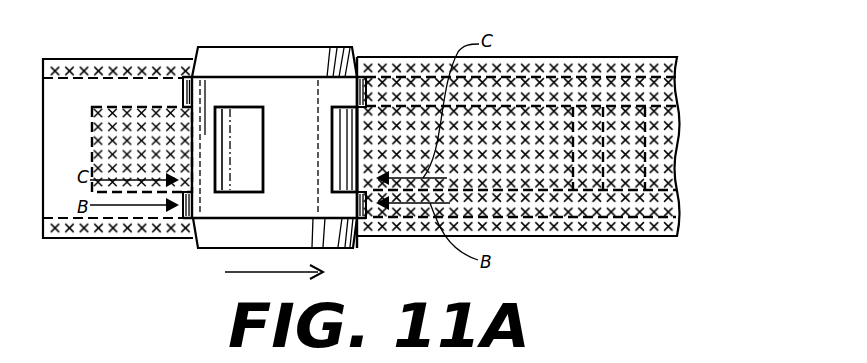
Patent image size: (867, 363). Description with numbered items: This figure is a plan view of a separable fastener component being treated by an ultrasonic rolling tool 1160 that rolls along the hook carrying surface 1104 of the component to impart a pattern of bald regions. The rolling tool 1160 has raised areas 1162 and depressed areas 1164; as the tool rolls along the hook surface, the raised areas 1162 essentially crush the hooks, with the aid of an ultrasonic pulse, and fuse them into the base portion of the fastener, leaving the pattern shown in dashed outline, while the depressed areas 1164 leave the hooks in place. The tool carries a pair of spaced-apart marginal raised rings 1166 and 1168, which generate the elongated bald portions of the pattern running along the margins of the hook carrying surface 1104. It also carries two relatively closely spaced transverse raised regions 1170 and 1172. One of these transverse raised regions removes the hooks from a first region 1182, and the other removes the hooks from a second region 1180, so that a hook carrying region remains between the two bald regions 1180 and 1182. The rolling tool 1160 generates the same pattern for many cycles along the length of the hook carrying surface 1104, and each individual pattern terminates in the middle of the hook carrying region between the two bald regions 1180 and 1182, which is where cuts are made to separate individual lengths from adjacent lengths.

The hook carrying surface 1104 is at (551, 143).
The ultrasonic rolling tool 1160 is at (259, 141).
The raised areas 1162 is at (277, 97).
The depressed areas 1164 is at (365, 113).
The marginal raised ring 1166 is at (247, 153).
The marginal raised ring 1168 is at (358, 215).
The transverse raised region 1170 is at (190, 135).
The transverse raised region 1172 is at (307, 188).
The second region 1180 is at (670, 172).
The first region 1182 is at (588, 196).